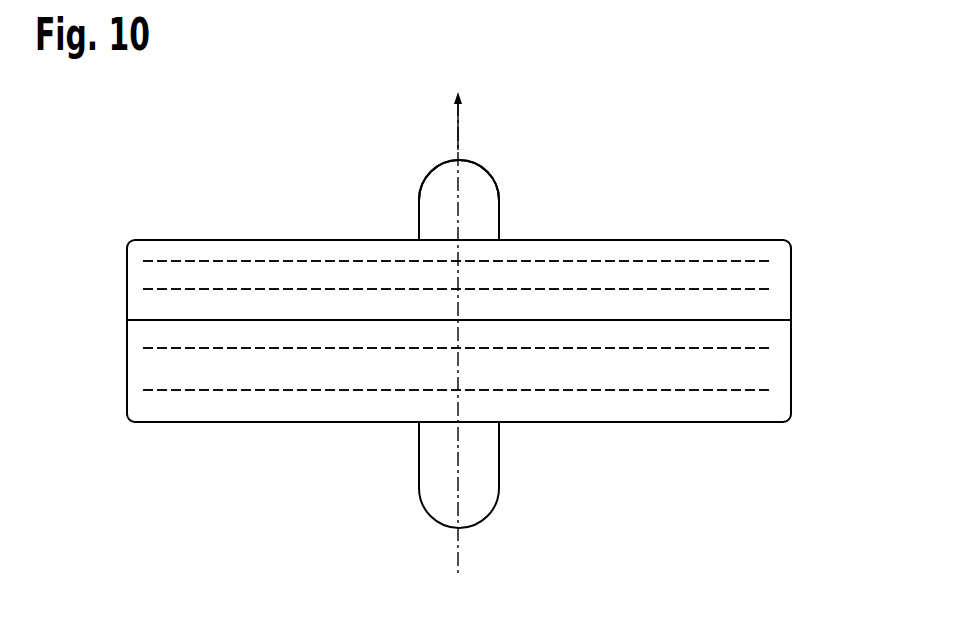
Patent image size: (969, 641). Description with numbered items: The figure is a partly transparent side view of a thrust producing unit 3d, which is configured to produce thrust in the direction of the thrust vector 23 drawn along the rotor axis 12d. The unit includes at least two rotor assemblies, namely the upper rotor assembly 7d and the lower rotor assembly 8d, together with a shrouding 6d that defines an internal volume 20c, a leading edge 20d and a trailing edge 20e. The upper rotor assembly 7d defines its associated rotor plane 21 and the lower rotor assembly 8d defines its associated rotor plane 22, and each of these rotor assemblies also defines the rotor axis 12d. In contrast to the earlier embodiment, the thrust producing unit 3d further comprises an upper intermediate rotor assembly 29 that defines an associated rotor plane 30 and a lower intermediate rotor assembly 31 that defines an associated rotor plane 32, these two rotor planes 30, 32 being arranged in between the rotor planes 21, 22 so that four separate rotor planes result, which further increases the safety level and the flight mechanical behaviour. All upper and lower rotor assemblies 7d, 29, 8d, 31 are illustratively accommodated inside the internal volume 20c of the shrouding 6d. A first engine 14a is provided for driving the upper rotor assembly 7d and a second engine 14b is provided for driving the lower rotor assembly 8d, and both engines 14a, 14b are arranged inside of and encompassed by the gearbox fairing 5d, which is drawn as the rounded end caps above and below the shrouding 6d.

The thrust producing unit 3d is at (188, 176).
The thrust vector 23 is at (455, 122).
The first engine 14a is at (426, 166).
The second engine 14b is at (414, 501).
The rotor axis 12d is at (458, 147).
The gearbox fairing 5d is at (480, 203).
The leading edge 20d is at (668, 233).
The trailing edge 20e is at (623, 430).
The shrouding 6d is at (768, 305).
The upper rotor assembly 7d is at (278, 255).
The upper intermediate rotor assembly 29 is at (343, 283).
The rotor plane 21 is at (118, 261).
The rotor plane 30 is at (118, 290).
The rotor plane 32 is at (118, 349).
The rotor plane 22 is at (118, 391).
The lower intermediate rotor assembly 31 is at (197, 356).
The lower rotor assembly 8d is at (244, 398).
The internal volume 20c is at (350, 334).